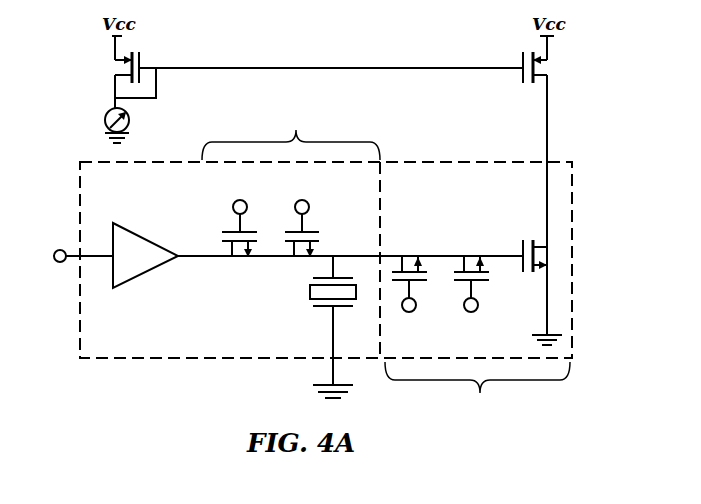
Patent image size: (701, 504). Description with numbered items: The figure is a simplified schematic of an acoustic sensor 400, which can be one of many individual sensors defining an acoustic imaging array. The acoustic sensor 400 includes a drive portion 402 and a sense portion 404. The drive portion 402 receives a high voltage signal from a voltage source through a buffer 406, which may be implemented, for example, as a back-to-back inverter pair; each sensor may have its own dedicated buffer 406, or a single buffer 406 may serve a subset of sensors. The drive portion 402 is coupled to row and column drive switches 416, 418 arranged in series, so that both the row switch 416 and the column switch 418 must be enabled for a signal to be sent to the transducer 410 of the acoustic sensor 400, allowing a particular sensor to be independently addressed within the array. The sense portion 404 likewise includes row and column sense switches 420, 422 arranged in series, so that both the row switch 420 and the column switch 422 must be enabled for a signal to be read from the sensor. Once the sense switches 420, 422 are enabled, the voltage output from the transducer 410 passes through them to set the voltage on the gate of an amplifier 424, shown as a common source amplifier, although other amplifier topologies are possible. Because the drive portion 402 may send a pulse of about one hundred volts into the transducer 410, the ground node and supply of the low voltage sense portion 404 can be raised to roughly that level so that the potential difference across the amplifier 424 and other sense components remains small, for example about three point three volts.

The acoustic sensor 400 is at (80, 164).
The drive portion 402 is at (291, 231).
The sense portion 404 is at (477, 393).
The buffer 406 is at (143, 233).
The transducer 410 is at (310, 288).
The row drive switch 416 is at (240, 200).
The column drive switch 418 is at (302, 200).
The row sense switch 420 is at (409, 312).
The column sense switch 422 is at (471, 312).
The amplifier 424 is at (548, 252).